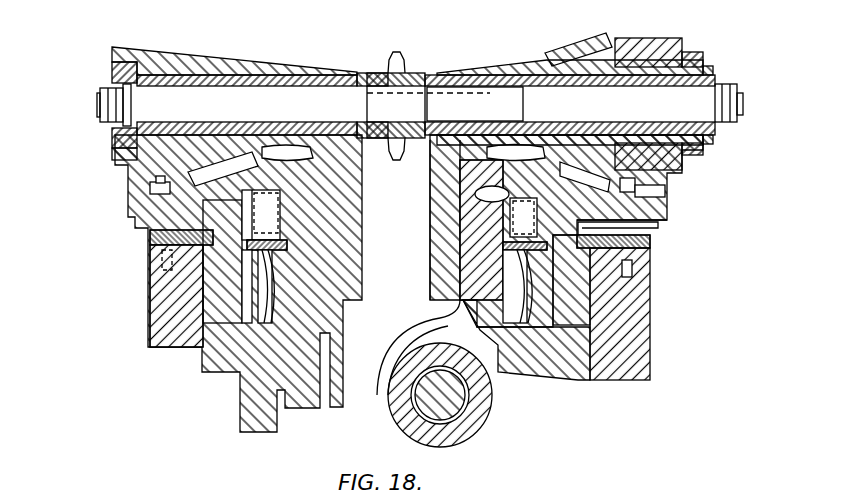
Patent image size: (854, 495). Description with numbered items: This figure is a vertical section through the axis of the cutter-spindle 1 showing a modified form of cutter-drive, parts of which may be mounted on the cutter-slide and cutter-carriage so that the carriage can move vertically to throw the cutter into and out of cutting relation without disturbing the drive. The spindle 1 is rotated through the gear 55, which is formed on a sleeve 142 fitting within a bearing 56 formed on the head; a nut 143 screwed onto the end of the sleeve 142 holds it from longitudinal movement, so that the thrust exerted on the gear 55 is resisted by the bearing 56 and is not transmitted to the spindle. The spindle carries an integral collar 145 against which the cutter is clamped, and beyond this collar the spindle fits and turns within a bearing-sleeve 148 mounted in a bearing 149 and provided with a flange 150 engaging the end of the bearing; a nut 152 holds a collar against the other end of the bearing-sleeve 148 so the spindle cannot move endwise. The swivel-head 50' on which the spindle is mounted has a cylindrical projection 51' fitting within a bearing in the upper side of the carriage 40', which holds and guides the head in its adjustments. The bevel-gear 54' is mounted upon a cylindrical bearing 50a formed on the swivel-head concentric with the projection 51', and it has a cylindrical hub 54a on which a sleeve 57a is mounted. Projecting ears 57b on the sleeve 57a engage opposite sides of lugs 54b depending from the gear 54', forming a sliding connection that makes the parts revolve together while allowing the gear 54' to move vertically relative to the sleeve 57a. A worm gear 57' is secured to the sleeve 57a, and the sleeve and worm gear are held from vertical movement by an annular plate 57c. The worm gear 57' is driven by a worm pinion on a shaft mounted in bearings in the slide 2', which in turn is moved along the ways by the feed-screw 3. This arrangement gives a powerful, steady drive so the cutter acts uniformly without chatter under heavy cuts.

The cutter-spindle 1 is at (707, 110).
The slide 2' is at (637, 317).
The feed-screw 3 is at (460, 405).
The carriage 40' is at (623, 280).
The swivel-head 50' is at (420, 283).
The cylindrical bearing 50a is at (440, 228).
The cylindrical projection 51' is at (673, 194).
The bevel-gear 54' is at (660, 214).
The cylindrical hub 54a is at (467, 277).
The lugs 54b is at (506, 211).
The gear 55 is at (580, 40).
The bearing 56 is at (670, 42).
The worm gear 57' is at (526, 354).
The sleeve 57a is at (487, 213).
The projecting ears 57b is at (658, 230).
The annular plate 57c is at (503, 247).
The sleeve 142 is at (713, 72).
The nut 143 is at (703, 60).
The collar 145 is at (357, 72).
The bearing-sleeve 148 is at (240, 78).
The bearing 149 is at (236, 65).
The flange 150 is at (112, 72).
The nut 152 is at (100, 115).